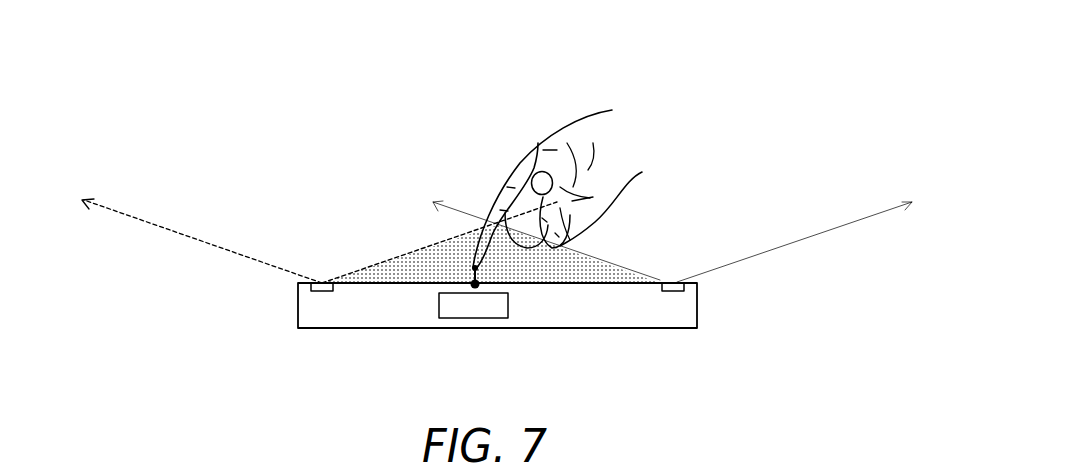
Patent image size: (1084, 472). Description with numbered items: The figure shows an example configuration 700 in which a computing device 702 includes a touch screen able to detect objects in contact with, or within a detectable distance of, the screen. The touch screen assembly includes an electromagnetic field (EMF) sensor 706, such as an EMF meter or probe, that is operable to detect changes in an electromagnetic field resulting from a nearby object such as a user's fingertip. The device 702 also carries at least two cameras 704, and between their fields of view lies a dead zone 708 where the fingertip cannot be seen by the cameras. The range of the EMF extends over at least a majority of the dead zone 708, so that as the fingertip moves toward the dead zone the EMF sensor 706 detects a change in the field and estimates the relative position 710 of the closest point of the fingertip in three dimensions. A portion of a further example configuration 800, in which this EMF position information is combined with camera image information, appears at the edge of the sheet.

The example configuration 700 is at (830, 115).
The device 702 is at (697, 319).
The cameras 704 is at (329, 282).
The electromagnetic field (EMF) sensor 706 is at (445, 320).
The dead zone 708 is at (416, 262).
The position of the fingertip 710 is at (481, 275).
The example configuration 800 is at (835, 471).